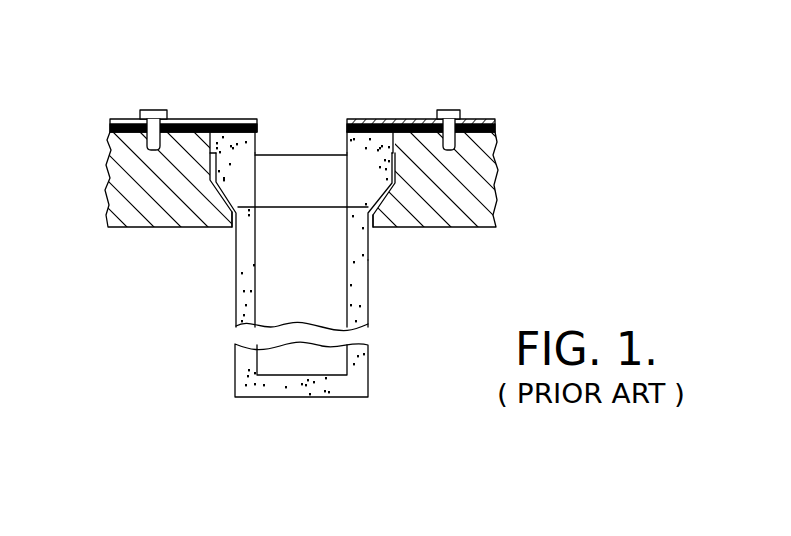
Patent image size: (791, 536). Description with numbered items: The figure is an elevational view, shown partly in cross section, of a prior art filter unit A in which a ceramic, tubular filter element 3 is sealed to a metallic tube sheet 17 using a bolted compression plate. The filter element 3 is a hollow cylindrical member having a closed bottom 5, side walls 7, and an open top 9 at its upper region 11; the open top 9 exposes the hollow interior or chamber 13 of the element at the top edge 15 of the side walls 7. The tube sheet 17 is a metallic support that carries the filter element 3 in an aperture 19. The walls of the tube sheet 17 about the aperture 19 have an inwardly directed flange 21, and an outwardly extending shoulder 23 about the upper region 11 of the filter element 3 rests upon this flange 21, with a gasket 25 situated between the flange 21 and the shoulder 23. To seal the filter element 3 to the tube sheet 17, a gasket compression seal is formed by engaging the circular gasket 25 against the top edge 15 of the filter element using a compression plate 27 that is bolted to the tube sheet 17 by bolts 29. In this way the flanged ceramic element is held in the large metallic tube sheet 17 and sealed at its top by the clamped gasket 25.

The ceramic tubular filter element 3 is at (190, 305).
The closed bottom 5 is at (312, 398).
The side walls 7 is at (368, 262).
The open top 9 is at (342, 70).
The upper region 11 is at (385, 225).
The hollow interior or chamber 13 is at (317, 275).
The top edge 15 is at (365, 119).
The tube sheet 17 is at (107, 148).
The aperture 19 is at (230, 228).
The inwardly directed flange 21 is at (252, 185).
The outwardly extending shoulder 23 is at (257, 180).
The gasket 25 is at (188, 119).
The compression plate 27 is at (110, 119).
The bolts 29 is at (152, 109).
The filter unit A is at (452, 76).